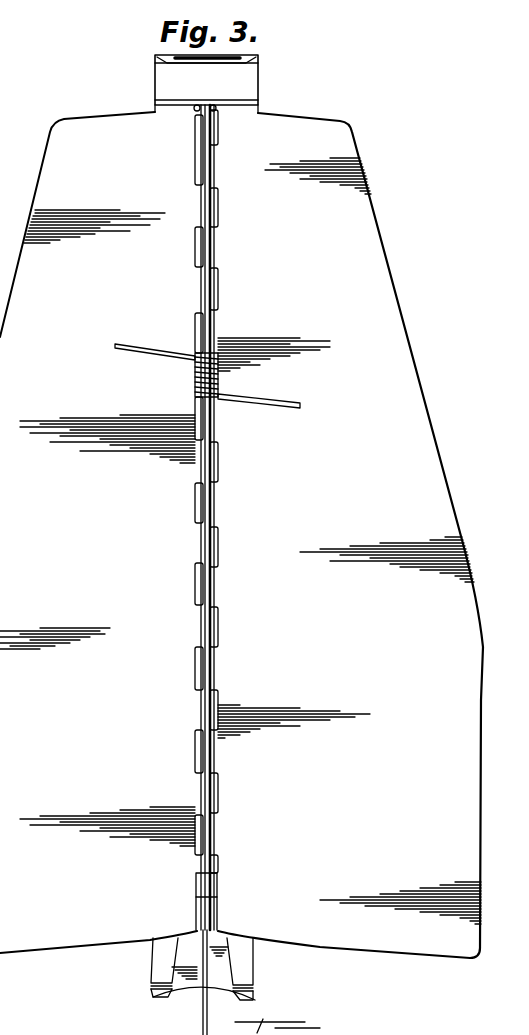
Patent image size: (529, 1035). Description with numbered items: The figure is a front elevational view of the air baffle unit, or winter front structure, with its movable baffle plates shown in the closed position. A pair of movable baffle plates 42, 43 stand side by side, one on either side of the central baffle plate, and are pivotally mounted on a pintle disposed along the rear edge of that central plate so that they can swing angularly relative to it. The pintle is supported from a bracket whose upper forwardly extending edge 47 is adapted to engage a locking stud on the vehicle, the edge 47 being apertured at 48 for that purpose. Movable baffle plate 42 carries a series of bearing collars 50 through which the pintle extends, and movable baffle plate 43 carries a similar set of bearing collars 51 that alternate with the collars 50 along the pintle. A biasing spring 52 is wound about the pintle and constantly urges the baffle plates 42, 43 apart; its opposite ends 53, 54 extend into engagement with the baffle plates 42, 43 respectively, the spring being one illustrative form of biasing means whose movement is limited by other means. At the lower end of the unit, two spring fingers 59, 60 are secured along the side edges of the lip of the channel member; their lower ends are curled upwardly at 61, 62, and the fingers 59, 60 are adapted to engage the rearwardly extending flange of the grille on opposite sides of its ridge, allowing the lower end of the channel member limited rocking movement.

The movable baffle plate 42 is at (110, 143).
The movable baffle plate 43 is at (333, 136).
The forwardly extending edge 47 is at (228, 58).
The aperture 48 is at (172, 62).
The bearing collars 50 is at (200, 225).
The bearing collars 51 is at (215, 246).
The biasing spring 52 is at (197, 378).
The spring end 53 is at (146, 349).
The spring end 54 is at (288, 401).
The spring finger 59 is at (163, 963).
The spring finger 60 is at (243, 970).
The curled lower end 61 is at (157, 995).
The curled lower end 62 is at (257, 993).